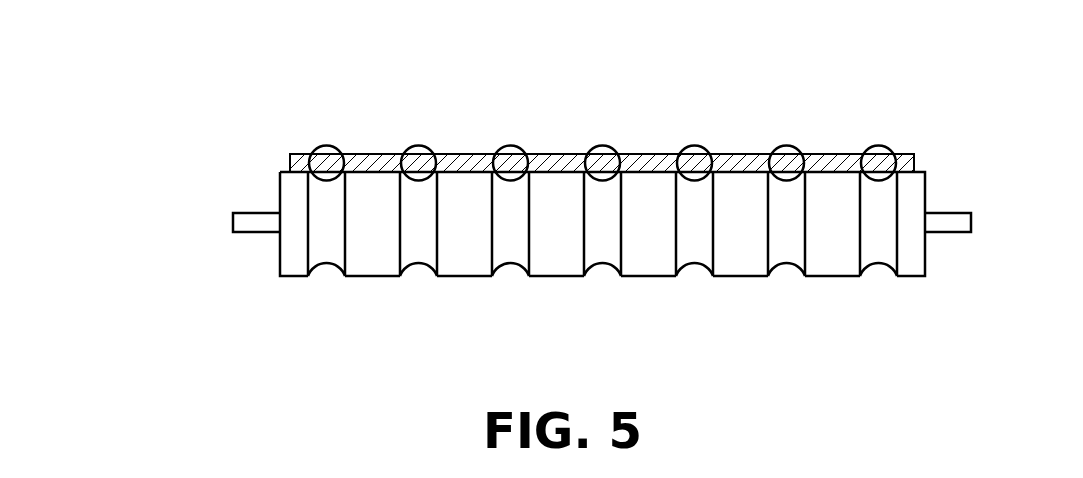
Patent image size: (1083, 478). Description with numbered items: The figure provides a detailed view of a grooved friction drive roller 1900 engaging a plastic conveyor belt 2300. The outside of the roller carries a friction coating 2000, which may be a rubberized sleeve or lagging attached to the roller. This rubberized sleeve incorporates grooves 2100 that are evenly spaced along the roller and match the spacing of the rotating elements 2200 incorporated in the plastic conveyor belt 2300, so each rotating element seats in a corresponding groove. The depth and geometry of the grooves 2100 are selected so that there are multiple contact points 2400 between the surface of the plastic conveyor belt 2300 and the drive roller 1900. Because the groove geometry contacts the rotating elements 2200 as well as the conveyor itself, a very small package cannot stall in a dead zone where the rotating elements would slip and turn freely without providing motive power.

The grooved friction drive roller 1900 is at (278, 243).
The friction coating 2000 is at (465, 277).
The grooves 2100 is at (695, 264).
The rotating elements 2200 is at (803, 145).
The plastic conveyor belt 2300 is at (372, 154).
The contact points 2400 is at (605, 183).